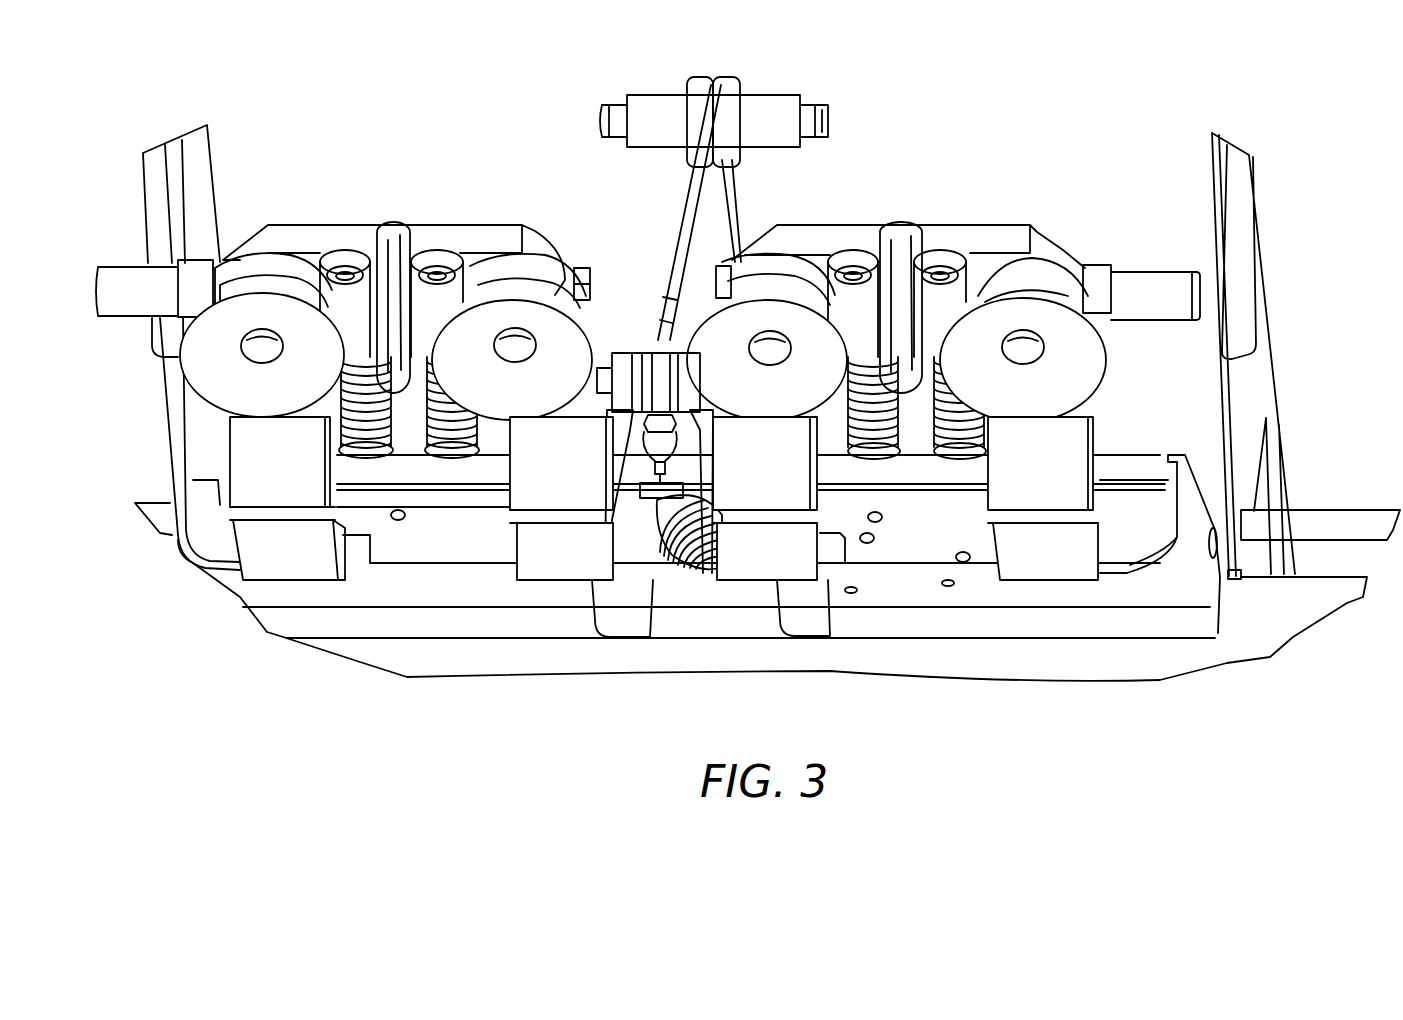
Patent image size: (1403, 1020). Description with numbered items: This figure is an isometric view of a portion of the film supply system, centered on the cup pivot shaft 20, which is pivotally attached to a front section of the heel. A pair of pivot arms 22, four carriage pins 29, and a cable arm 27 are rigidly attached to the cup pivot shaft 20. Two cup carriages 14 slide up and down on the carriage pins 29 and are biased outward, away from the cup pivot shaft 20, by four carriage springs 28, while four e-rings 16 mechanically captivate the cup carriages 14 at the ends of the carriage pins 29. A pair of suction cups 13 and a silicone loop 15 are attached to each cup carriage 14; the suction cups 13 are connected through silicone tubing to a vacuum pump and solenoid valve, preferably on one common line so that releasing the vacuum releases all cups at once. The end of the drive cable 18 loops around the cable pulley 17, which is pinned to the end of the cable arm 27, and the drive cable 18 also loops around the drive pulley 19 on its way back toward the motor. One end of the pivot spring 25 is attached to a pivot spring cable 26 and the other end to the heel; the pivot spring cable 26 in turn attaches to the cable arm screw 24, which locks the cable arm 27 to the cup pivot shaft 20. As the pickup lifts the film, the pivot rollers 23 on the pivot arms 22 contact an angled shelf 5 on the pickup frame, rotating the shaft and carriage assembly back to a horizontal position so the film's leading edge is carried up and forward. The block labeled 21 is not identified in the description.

The angled shelf 5 is at (1243, 243).
The suction cup 13 is at (243, 317).
The cup carriage 14 is at (303, 240).
The silicone loop 15 is at (385, 268).
The e-ring 16 is at (433, 265).
The cable pulley 17 is at (642, 347).
The drive cable 18 is at (690, 210).
The drive pulley 19 is at (778, 105).
The cup pivot shaft 20 is at (908, 470).
The clamp block 21 is at (1048, 481).
The pivot arm 22 is at (1100, 270).
The pivot roller 23 is at (1166, 282).
The cable arm screw 24 is at (688, 438).
The pivot spring 25 is at (720, 500).
The pivot spring cable 26 is at (615, 520).
The cable arm 27 is at (607, 438).
The carriage spring 28 is at (450, 452).
The carriage pin 29 is at (335, 460).